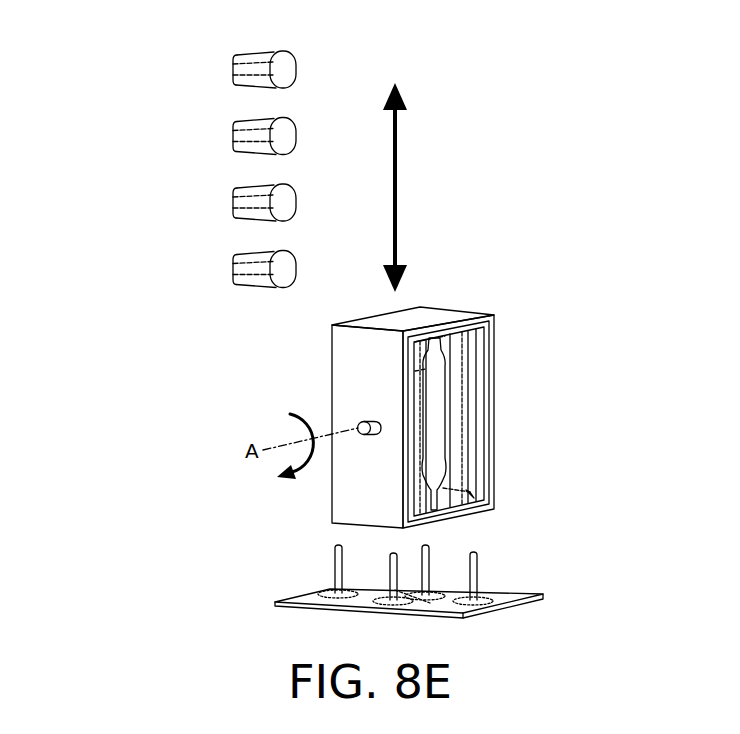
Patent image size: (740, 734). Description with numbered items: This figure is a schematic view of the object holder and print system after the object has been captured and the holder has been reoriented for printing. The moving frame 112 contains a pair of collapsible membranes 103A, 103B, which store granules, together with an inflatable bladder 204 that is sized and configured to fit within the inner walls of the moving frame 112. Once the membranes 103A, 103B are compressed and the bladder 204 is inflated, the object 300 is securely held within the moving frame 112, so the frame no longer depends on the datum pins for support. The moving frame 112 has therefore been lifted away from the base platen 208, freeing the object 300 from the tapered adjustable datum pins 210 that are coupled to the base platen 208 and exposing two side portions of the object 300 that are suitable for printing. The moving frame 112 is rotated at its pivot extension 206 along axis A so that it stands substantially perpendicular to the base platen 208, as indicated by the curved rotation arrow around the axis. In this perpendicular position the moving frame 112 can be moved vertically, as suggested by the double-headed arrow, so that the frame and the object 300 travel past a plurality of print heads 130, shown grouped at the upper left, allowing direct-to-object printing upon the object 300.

The print heads 130 is at (222, 43).
The moving frame 112 is at (349, 357).
The inflatable bladder 204 is at (482, 366).
The collapsible membrane 103B is at (470, 422).
The object 300 is at (430, 383).
The collapsible membrane 103A is at (418, 497).
The pivot extension 206 is at (360, 424).
The adjustable datum pins 210 is at (336, 568).
The base platen 208 is at (304, 608).